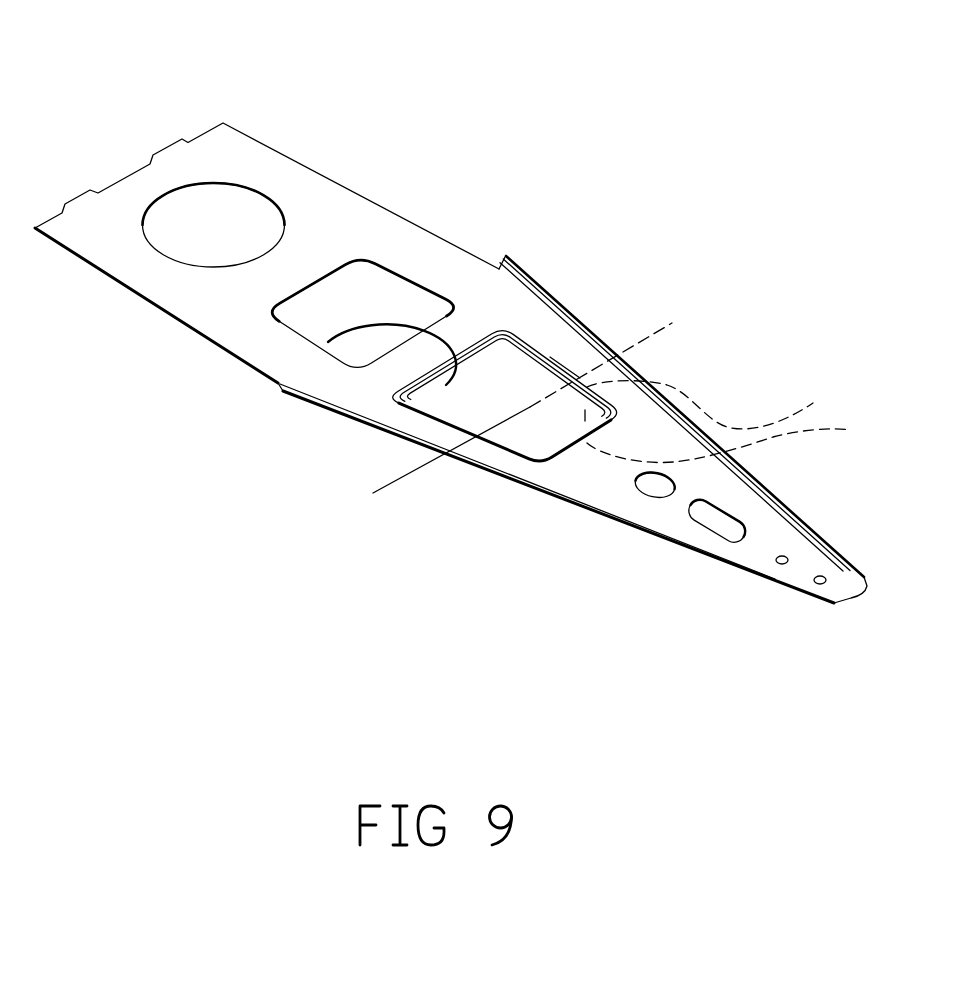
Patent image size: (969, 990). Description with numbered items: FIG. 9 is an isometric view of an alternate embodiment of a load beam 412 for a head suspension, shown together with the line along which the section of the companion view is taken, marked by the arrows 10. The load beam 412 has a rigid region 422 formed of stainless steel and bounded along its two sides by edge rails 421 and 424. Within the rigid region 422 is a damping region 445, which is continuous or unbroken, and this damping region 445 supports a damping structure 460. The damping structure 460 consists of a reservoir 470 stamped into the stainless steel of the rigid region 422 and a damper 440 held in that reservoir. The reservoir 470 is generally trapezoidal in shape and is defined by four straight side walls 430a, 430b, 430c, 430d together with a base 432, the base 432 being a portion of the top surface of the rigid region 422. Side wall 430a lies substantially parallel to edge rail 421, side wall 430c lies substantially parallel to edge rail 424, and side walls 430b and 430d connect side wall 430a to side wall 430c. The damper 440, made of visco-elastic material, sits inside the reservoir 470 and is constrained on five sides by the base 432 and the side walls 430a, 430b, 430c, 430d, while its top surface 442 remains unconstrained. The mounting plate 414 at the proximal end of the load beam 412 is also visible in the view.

The section line 10- 10 is at (373, 493).
The load beam 412 is at (427, 233).
The base plate 414 is at (270, 150).
The edge rail 421 is at (773, 580).
The rigid region 422 is at (550, 357).
The edge rail 424 is at (827, 541).
The side wall 430a is at (490, 425).
The side wall 430b is at (443, 400).
The side wall 430c is at (565, 345).
The side wall 430d is at (587, 440).
The base 432 is at (725, 405).
The damper 440 is at (490, 425).
The top surface 442 is at (385, 325).
The damping region 445 is at (740, 437).
The damping structure 460 is at (528, 462).
The reservoir 470 is at (512, 328).